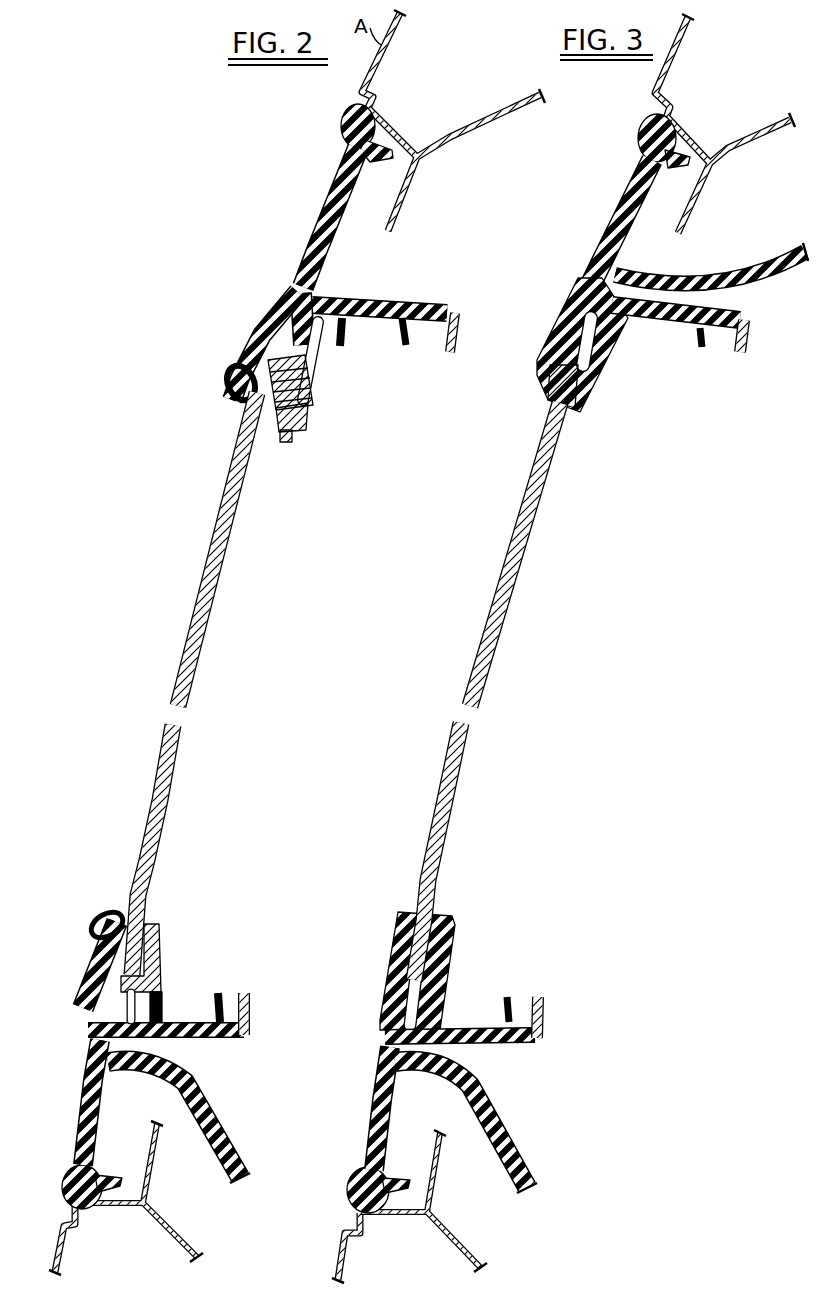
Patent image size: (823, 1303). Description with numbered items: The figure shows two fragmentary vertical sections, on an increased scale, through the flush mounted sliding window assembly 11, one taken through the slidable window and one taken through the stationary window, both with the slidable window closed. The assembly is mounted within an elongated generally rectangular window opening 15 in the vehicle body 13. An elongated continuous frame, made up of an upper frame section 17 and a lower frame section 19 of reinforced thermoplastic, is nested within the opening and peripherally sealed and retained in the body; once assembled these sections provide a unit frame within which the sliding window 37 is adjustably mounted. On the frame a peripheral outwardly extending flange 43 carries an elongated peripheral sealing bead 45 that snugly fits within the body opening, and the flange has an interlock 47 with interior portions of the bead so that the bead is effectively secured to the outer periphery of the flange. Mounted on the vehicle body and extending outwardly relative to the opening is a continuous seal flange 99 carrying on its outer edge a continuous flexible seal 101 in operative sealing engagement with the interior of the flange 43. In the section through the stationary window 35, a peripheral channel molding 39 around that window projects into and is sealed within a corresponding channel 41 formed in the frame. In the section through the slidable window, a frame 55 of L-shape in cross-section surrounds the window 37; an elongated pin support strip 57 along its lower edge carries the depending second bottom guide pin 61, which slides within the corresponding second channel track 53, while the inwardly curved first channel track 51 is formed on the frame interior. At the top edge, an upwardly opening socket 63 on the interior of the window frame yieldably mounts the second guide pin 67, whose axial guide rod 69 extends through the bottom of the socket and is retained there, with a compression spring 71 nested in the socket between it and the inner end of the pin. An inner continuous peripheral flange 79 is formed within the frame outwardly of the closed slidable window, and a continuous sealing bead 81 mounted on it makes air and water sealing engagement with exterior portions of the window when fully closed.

In FIG. 2, the flush mounted sliding window assembly 11 is at (256, 284).
In FIG. 2, the vehicle body 13 is at (360, 82).
In FIG. 3, the vehicle body 13 is at (655, 82).
In FIG. 2, the window opening 15 is at (370, 188).
In FIG. 3, the window opening 15 is at (677, 187).
In FIG. 2, the upper frame section 17 is at (258, 312).
In FIG. 2, the lower frame section 19 is at (83, 1003).
In FIG. 3, the stationary window 35 is at (447, 835).
In FIG. 2, the sliding window 37 is at (165, 818).
In FIG. 3, the peripheral channel molding 39 is at (553, 377).
In FIG. 3, the channel 41 is at (557, 347).
In FIG. 2, the peripheral outwardly extending flange 43 is at (310, 246).
In FIG. 3, the peripheral outwardly extending flange 43 is at (602, 247).
In FIG. 2, the peripheral sealing bead 45 is at (343, 128).
In FIG. 3, the peripheral sealing bead 45 is at (638, 142).
In FIG. 2, the interlock 47 is at (355, 154).
In FIG. 2, the first channel track 51 is at (432, 348).
In FIG. 3, the first channel track 51 is at (730, 348).
In FIG. 2, the second channel track 53 is at (345, 330).
In FIG. 2, the frame 55 is at (273, 410).
In FIG. 2, the pin support strip 57 is at (157, 933).
In FIG. 2, the second bottom guide pin 61 is at (140, 1008).
In FIG. 2, the socket 63 is at (303, 422).
In FIG. 2, the second guide pin 67 is at (312, 353).
In FIG. 2, the axial guide rod 69 is at (283, 440).
In FIG. 2, the compression spring 71 is at (310, 403).
In FIG. 2, the inner continuous peripheral flange 79 is at (257, 337).
In FIG. 2, the continuous sealing bead 81 is at (226, 386).
In FIG. 2, the seal flange 99 is at (222, 1113).
In FIG. 3, the seal flange 99 is at (757, 264).
In FIG. 2, the flexible seal 101 is at (153, 1060).
In FIG. 3, the flexible seal 101 is at (623, 263).